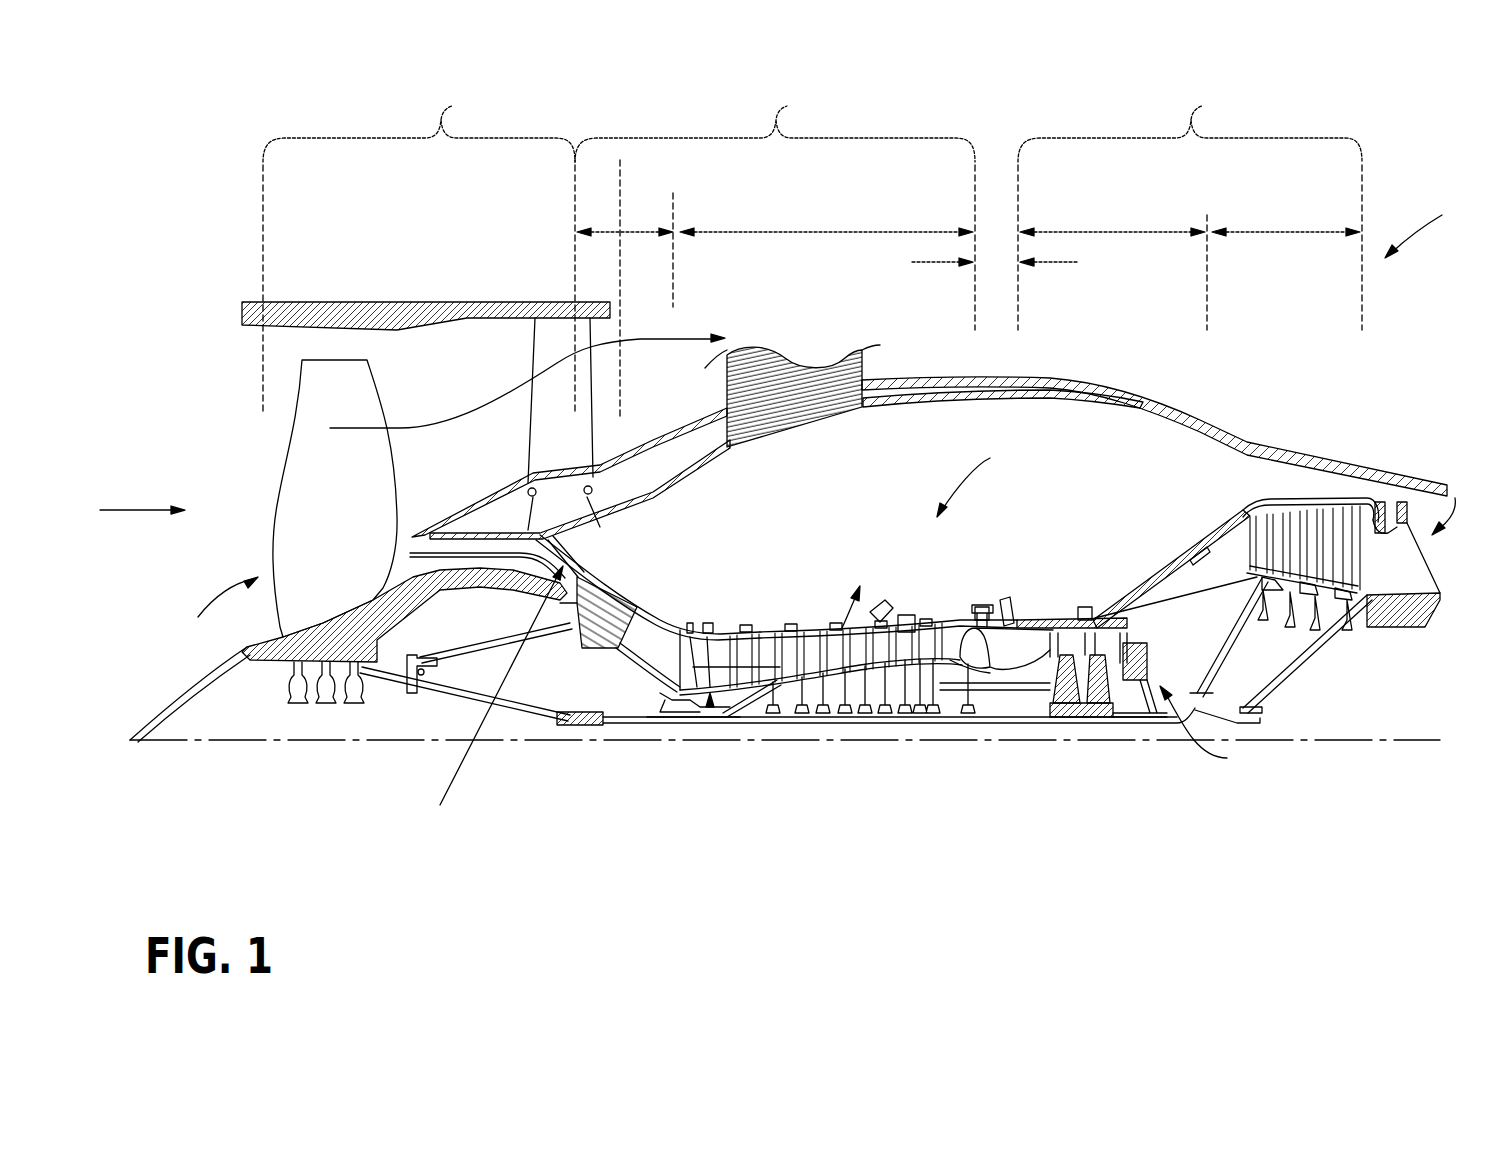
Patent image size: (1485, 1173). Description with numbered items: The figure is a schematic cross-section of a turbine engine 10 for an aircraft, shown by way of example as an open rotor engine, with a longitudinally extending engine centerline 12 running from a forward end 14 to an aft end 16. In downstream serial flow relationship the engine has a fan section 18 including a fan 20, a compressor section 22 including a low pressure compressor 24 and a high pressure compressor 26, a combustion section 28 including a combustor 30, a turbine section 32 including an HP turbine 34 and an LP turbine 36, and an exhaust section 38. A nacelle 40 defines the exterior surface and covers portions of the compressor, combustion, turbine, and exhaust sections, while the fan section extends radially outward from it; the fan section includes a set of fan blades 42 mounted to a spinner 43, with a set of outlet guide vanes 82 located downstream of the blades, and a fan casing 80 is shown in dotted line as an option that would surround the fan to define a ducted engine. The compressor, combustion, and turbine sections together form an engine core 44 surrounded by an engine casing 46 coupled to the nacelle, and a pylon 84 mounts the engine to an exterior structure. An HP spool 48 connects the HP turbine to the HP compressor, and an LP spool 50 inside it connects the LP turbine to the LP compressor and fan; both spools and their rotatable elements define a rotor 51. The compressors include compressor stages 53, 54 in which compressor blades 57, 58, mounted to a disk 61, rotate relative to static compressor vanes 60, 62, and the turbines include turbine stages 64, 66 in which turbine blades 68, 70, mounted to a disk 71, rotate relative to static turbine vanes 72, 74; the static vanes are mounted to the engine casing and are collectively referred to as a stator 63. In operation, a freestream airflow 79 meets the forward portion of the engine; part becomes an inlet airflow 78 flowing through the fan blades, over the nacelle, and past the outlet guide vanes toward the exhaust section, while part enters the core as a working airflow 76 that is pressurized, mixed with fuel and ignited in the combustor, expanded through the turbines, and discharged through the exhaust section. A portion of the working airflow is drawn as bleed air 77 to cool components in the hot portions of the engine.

The turbine engine 10 is at (1429, 221).
The engine centerline 12 is at (258, 743).
The forward end 14 is at (168, 459).
The aft end 16 is at (1468, 566).
The fan section 18 is at (419, 246).
The fan 20 is at (372, 635).
The compressor section 22 is at (775, 249).
The low pressure compressor 24 is at (610, 230).
The high pressure compressor 26 is at (812, 230).
The combustion section 28 is at (930, 263).
The combustor 30 is at (1013, 612).
The turbine section 32 is at (1190, 204).
The HP turbine 34 is at (1113, 230).
The LP turbine 36 is at (1285, 230).
The exhaust section 38 is at (1411, 555).
The nacelle 40 is at (1243, 440).
The fan blades 42 is at (348, 402).
The spinner 43 is at (175, 697).
The engine core 44 is at (981, 481).
The engine casing 46 is at (1192, 552).
The HP spool 48 is at (978, 693).
The LP spool 50 is at (572, 727).
The rotor 51 is at (1266, 675).
The compressor stages 53 is at (650, 550).
The compressor stages 54 is at (808, 617).
The compressor blades 57 is at (605, 583).
The compressor blades 58 is at (722, 633).
The static compressor vanes 60 is at (600, 573).
The disk 61 is at (473, 580).
The static compressor vanes 62 is at (707, 630).
The stator 63 is at (706, 707).
The turbine stages 64 is at (1017, 575).
The turbine stages 66 is at (1288, 447).
The turbine blades 68 is at (1070, 623).
The turbine blades 70 is at (1350, 508).
The disk 71 is at (1262, 582).
The static turbine vanes 72 is at (1055, 620).
The static turbine vanes 74 is at (1333, 507).
The working airflow 76 is at (488, 700).
The bleed air 77 is at (838, 605).
The inlet airflow 78 is at (528, 378).
The freestream airflow 79 is at (152, 513).
The fan casing 80 is at (337, 300).
The outlet guide vanes 82 is at (540, 414).
The pylon 84 is at (793, 353).